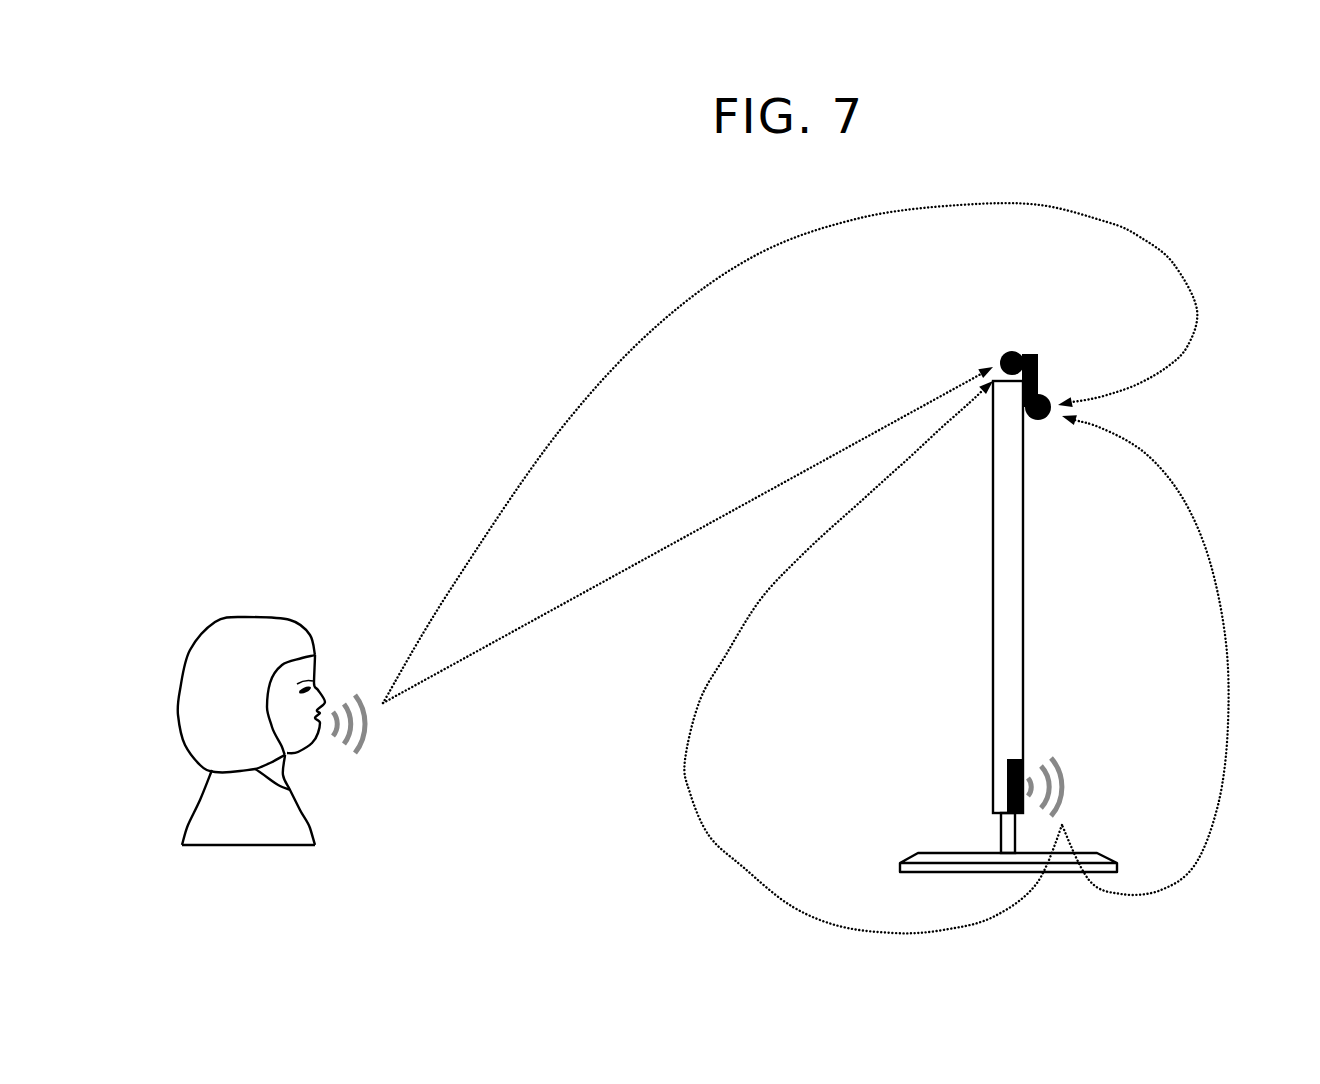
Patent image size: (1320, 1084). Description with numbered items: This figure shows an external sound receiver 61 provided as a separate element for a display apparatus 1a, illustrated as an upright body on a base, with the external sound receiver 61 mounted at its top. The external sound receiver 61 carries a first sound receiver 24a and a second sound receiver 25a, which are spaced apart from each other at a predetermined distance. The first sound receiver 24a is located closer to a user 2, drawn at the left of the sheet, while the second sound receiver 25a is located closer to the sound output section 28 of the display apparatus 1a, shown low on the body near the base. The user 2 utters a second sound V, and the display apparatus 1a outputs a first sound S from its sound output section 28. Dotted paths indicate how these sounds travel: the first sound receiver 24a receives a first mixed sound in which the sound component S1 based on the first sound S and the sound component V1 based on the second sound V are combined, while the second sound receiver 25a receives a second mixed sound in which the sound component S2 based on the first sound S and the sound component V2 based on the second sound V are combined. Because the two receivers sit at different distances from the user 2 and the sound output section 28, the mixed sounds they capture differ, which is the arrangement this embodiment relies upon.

The user 2 is at (248, 617).
The second sound V is at (365, 753).
The sound component based on the second sound V1 is at (803, 472).
The sound component based on the second sound V2 is at (1137, 386).
The first sound S is at (1070, 787).
The sound component based on the first sound S1 is at (835, 520).
The sound component based on the first sound S2 is at (1180, 493).
The display apparatus 1a is at (1023, 597).
The sound output section 28 is at (1023, 760).
The external sound receiver 61 is at (1028, 352).
The first sound receiver 24a is at (1003, 353).
The second sound receiver 25a is at (1043, 420).